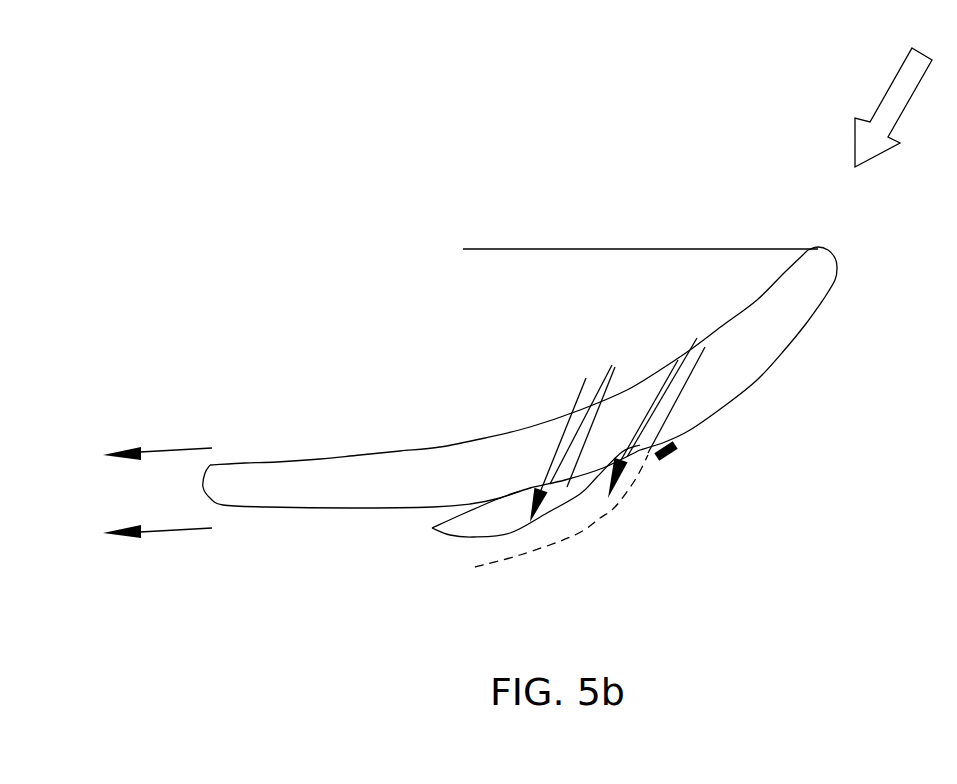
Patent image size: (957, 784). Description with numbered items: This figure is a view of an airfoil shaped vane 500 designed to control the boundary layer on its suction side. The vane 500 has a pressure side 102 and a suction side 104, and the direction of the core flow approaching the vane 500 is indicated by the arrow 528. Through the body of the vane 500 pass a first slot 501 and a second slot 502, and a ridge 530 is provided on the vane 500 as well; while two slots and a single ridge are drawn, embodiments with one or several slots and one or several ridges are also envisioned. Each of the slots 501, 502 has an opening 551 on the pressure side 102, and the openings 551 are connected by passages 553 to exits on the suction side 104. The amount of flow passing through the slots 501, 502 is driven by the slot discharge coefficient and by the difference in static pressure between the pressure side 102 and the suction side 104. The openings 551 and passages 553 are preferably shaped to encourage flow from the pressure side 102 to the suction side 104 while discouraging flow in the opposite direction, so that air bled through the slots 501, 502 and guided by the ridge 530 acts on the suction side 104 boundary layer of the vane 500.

The core flow direction 528 is at (892, 77).
The vane 500 is at (844, 243).
The pressure side 102 is at (397, 448).
The suction side 104 is at (785, 348).
The openings 551 is at (680, 366).
The second slot 502 is at (557, 452).
The first slot 501 is at (682, 403).
The ridge 530 is at (672, 462).
The passages 553 is at (515, 493).